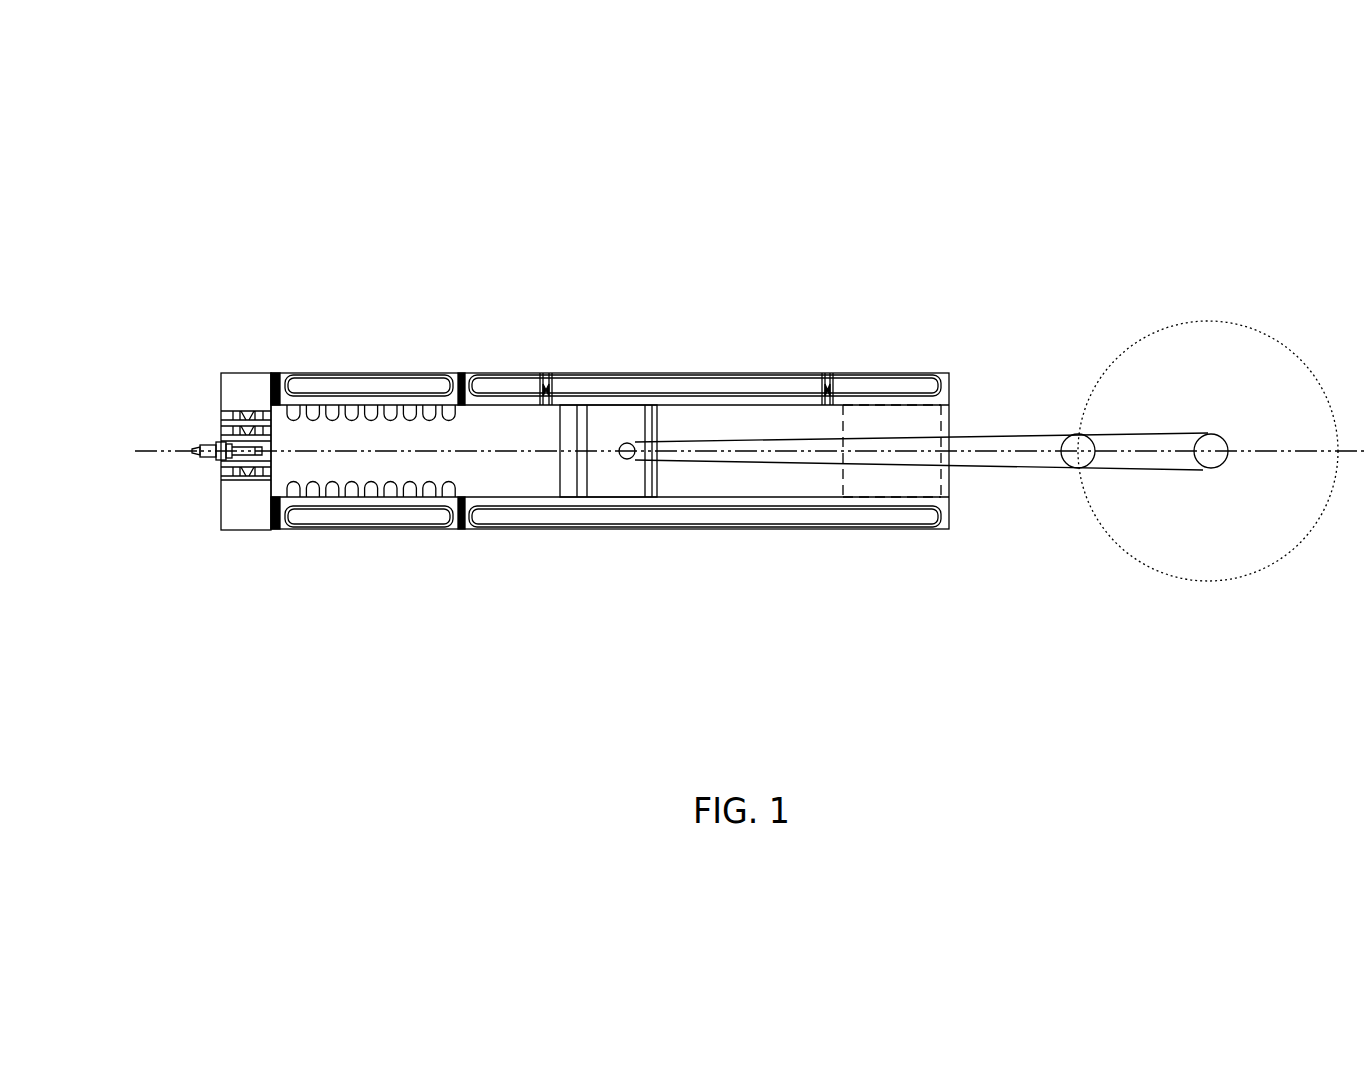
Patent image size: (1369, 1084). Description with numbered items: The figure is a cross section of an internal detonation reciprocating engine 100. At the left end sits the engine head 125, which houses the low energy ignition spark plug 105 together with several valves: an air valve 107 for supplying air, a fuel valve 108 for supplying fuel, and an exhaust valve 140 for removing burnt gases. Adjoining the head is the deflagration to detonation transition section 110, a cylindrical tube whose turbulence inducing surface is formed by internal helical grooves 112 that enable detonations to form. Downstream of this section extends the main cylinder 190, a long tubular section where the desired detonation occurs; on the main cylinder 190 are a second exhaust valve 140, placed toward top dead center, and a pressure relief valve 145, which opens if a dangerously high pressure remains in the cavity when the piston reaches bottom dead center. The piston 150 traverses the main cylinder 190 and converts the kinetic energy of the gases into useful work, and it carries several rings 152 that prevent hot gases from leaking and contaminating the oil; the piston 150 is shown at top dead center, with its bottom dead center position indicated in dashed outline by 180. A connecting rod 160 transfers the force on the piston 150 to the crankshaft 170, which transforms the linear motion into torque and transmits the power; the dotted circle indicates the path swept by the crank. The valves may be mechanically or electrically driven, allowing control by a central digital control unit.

The internal detonation reciprocating engine 100 is at (925, 155).
The low energy ignition spark plug 105 is at (225, 456).
The air valve 107 is at (221, 413).
The fuel valve 108 is at (221, 437).
The deflagration to detonation transition section 110 is at (370, 537).
The internal helical grooves 112 is at (388, 492).
The engine head 125 is at (248, 532).
The exhaust valves 140 is at (221, 480).
The relief valve 145 is at (820, 352).
The piston 150 is at (598, 478).
The rings 152 is at (648, 410).
The connecting rod 160 is at (1005, 437).
The crankshaft 170 is at (1208, 432).
The piston at bottom dead center 180 is at (877, 514).
The main cylinder 190 is at (725, 530).